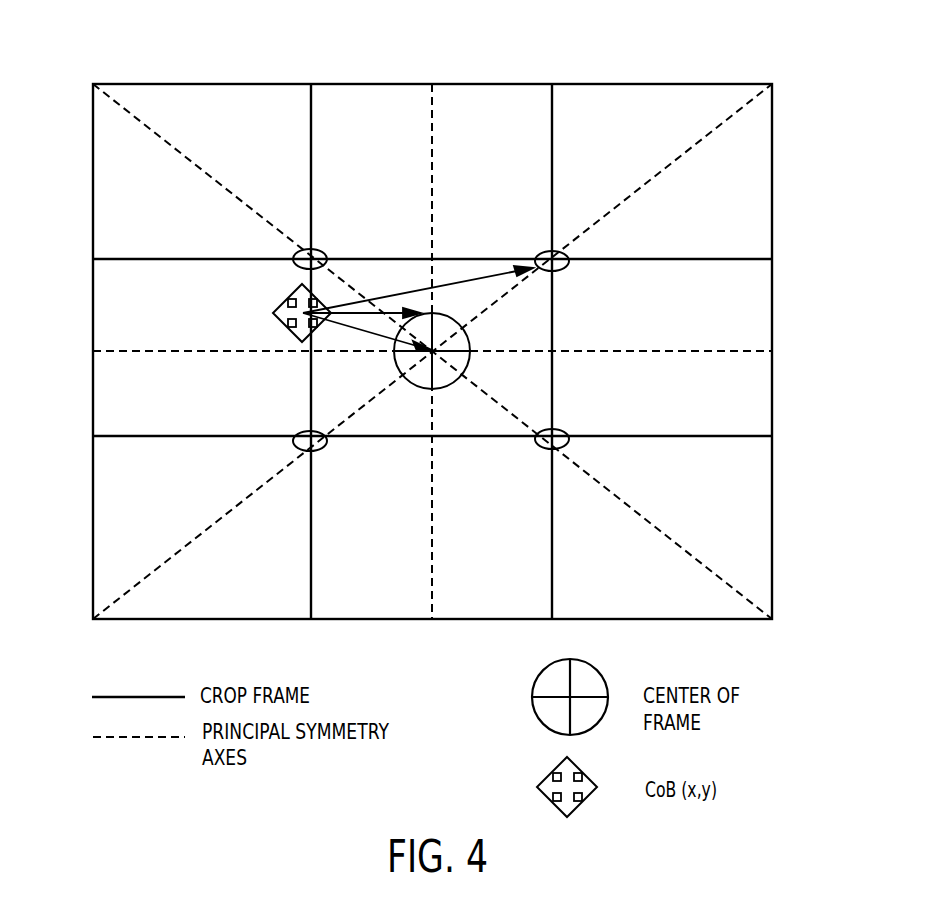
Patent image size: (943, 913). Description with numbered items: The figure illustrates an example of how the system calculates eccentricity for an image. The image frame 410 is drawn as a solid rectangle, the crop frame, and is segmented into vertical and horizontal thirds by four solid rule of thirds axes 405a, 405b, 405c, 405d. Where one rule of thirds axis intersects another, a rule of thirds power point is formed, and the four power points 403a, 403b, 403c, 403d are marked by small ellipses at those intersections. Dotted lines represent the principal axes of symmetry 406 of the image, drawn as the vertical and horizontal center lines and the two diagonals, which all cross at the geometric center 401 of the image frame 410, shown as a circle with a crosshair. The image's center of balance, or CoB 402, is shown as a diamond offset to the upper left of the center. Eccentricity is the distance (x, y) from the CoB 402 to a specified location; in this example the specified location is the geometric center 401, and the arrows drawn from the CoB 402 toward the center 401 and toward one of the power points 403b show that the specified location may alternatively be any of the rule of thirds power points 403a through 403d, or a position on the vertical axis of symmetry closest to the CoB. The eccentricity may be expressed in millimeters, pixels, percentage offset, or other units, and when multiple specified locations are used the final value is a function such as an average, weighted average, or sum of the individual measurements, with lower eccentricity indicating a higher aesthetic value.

The image frame 410 is at (615, 83).
The geometric center 401 is at (455, 339).
The CoB 402 is at (281, 305).
The rule of thirds power point 403a is at (301, 258).
The rule of thirds power point 403b is at (556, 262).
The rule of thirds power point 403c is at (305, 440).
The rule of thirds power point 403d is at (555, 436).
The rule of thirds axis 405a is at (180, 258).
The rule of thirds axis 405b is at (310, 570).
The rule of thirds axis 405c is at (552, 132).
The rule of thirds axis 405d is at (715, 258).
The principal axis of symmetry 406 is at (430, 188).